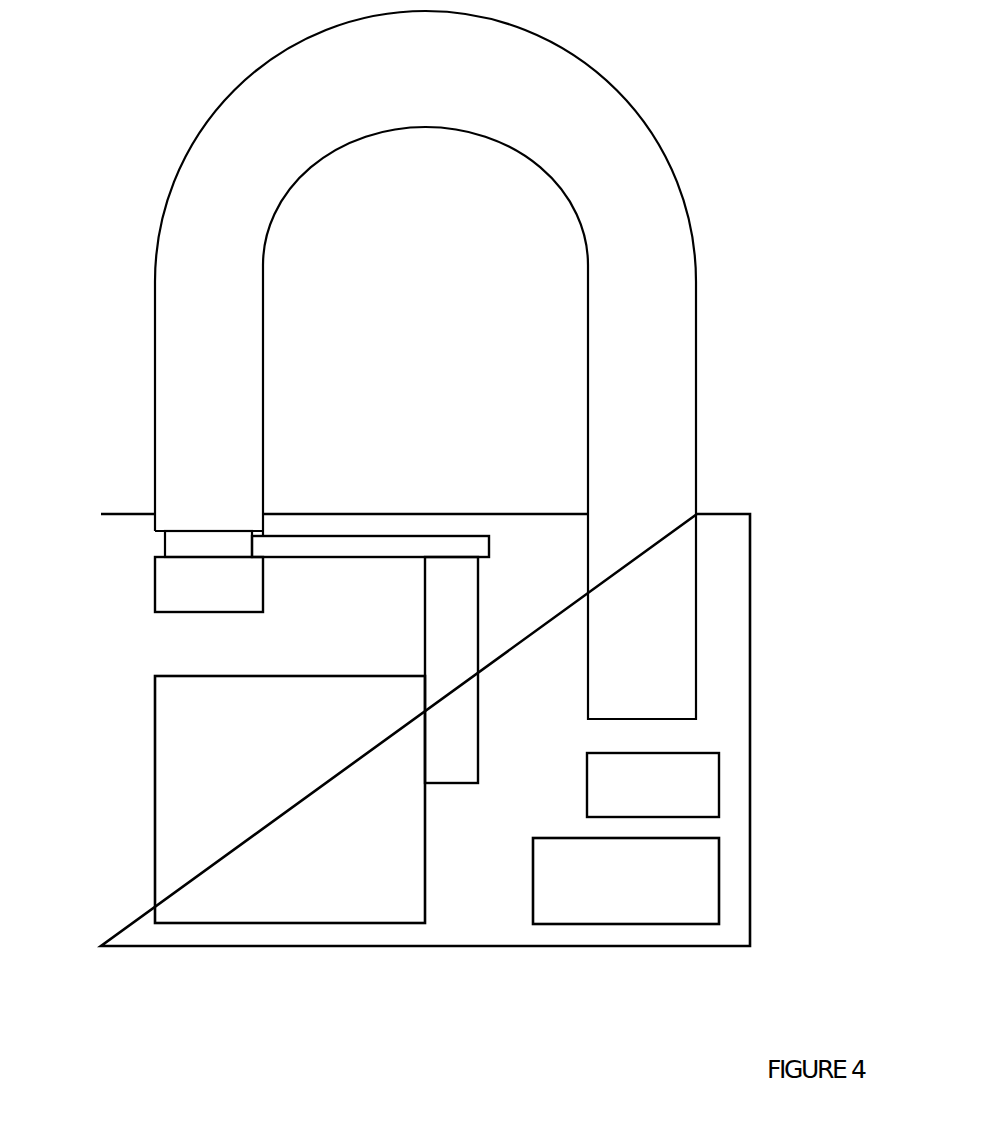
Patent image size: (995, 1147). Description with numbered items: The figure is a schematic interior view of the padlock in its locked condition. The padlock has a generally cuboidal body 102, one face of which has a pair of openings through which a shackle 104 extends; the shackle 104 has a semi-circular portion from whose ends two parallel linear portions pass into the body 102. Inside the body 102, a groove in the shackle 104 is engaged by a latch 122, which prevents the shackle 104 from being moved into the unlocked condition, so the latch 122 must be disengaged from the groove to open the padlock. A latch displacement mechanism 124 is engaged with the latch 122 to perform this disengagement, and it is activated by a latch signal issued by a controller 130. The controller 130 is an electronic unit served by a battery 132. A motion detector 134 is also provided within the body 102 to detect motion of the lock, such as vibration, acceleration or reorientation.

The body 102 is at (140, 950).
The shackle 104 is at (183, 283).
The latch 122 is at (326, 537).
The latch displacement mechanism 124 is at (450, 668).
The controller 130 is at (311, 900).
The battery 132 is at (630, 896).
The motion detector 134 is at (701, 773).